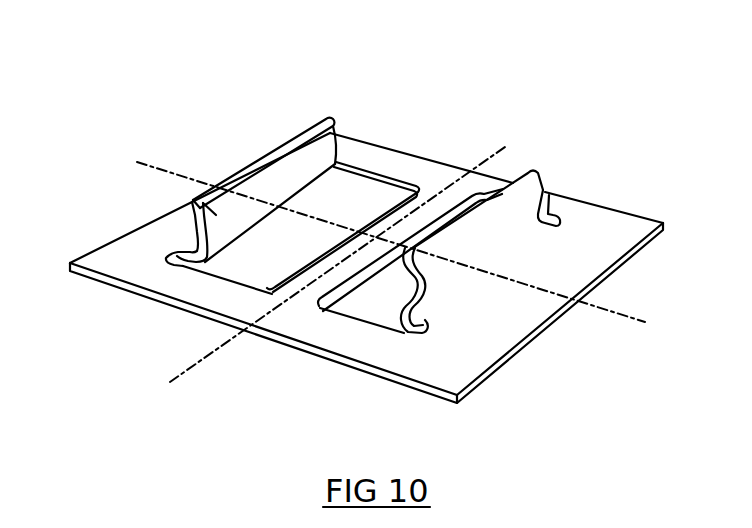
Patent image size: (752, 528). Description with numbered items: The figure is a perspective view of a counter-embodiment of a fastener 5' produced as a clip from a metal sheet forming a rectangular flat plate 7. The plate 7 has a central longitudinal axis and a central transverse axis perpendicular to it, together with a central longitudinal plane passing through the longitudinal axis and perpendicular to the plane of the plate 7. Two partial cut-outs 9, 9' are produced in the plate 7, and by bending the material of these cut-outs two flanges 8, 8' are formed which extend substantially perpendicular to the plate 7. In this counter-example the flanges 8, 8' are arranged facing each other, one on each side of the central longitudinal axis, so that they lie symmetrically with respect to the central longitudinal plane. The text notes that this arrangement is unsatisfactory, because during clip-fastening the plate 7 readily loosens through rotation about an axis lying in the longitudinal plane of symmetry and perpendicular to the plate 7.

The fastener 5' is at (264, 146).
The plate 7 is at (406, 355).
The flange 8 is at (142, 227).
The flange 8' is at (481, 291).
The cut-out 9 is at (301, 187).
The cut-out 9' is at (370, 291).